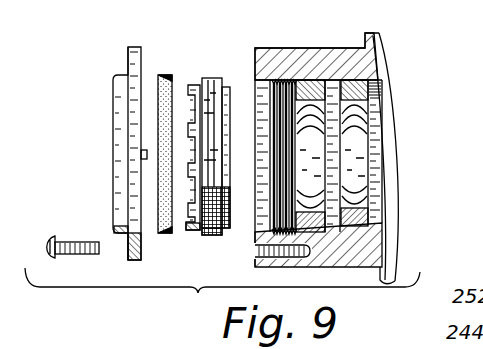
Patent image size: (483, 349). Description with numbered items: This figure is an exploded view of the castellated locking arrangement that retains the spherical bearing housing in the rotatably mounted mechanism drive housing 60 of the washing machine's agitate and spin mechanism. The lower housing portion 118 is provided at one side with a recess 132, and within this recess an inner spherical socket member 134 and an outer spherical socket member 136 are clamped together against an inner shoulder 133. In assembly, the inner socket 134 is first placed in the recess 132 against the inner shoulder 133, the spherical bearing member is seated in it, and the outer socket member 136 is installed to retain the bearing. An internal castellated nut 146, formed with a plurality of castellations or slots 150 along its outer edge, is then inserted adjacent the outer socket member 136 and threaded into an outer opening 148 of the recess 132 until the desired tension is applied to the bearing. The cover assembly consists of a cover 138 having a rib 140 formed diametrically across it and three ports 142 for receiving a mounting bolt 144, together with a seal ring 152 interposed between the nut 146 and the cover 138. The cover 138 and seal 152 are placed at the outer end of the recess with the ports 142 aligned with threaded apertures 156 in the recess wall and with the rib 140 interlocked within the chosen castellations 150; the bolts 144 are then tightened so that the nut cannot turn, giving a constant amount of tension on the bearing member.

The mechanism drive housing 60 is at (348, 144).
The lower housing portion 118 is at (374, 53).
The recess 132 is at (373, 222).
The inner shoulder 133 is at (377, 93).
The inner spherical socket member 134 is at (378, 104).
The outer spherical socket member 136 is at (330, 86).
The cover 138 is at (101, 166).
The rib 140 is at (141, 155).
The ports 142 is at (130, 247).
The mounting bolt 144 is at (72, 243).
The internal castellated nut 146 is at (208, 80).
The outer opening 148 is at (284, 86).
The castellations 150 is at (193, 88).
The seal ring 152 is at (168, 236).
The threaded apertures 156 is at (258, 252).